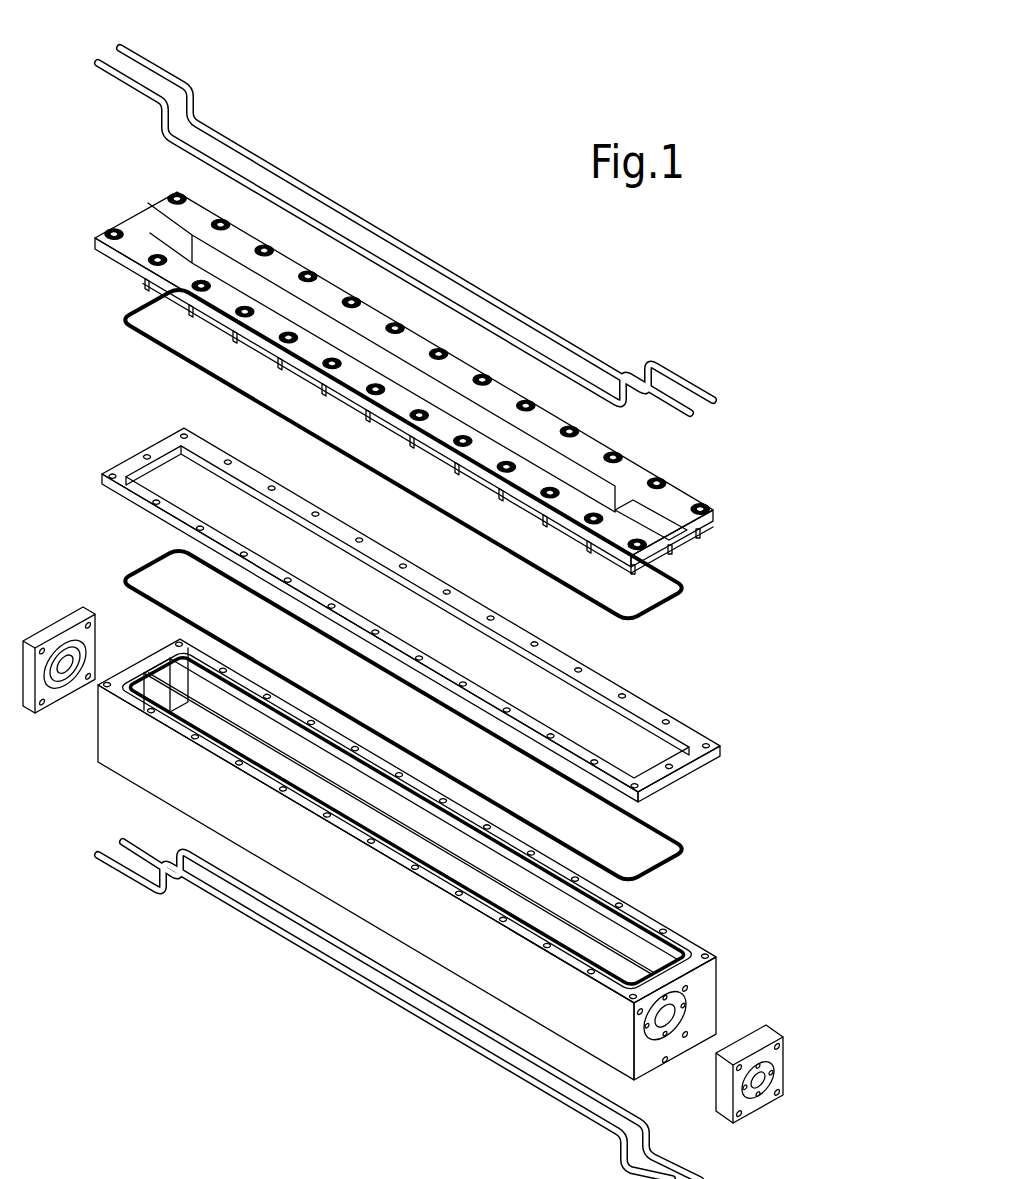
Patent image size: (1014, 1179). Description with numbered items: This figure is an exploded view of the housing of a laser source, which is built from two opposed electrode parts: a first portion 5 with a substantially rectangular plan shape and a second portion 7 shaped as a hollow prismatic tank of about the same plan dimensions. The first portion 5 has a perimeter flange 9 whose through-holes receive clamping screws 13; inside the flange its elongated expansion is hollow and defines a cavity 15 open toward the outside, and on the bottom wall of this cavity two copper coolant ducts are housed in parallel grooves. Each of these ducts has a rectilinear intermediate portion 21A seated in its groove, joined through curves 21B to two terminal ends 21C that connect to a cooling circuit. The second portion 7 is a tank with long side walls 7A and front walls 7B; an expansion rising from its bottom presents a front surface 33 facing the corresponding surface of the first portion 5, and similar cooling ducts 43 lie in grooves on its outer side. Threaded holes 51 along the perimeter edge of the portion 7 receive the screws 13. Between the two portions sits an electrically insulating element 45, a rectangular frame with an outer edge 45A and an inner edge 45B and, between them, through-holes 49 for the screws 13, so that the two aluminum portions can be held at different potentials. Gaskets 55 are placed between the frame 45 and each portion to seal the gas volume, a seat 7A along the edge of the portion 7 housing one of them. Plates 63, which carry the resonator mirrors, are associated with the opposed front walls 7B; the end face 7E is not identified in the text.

The first portion 5 is at (112, 206).
The second portion 7 is at (92, 768).
The long side walls 7A is at (280, 735).
The front walls 7B is at (160, 673).
The end face of housing 7E is at (690, 947).
The flange 9 is at (682, 500).
The clamping screws 13 is at (108, 230).
The cavity 15 is at (262, 292).
The rectilinear intermediate portion 21A is at (408, 272).
The curves 21B is at (195, 118).
The terminal ends 21C is at (118, 52).
The front surface 33 is at (620, 945).
The cooling ducts 43 is at (500, 1023).
The electrically insulating element 45 is at (150, 445).
The rectangular outer edge 45A is at (688, 788).
The rectangular inner edge 45B is at (625, 725).
The through-holes 49 is at (140, 492).
The threaded holes 51 is at (578, 878).
The gaskets 55 is at (680, 588).
The plates 63 is at (60, 640).